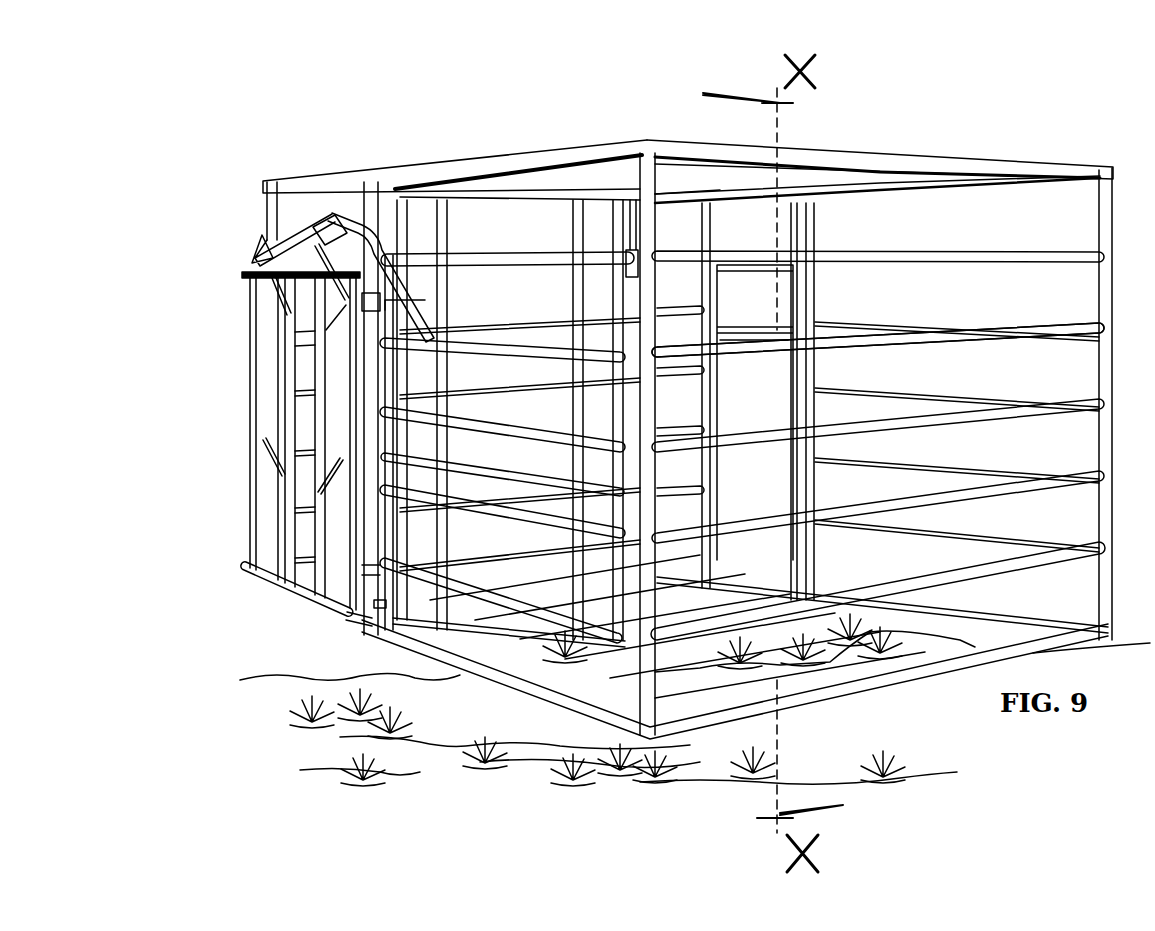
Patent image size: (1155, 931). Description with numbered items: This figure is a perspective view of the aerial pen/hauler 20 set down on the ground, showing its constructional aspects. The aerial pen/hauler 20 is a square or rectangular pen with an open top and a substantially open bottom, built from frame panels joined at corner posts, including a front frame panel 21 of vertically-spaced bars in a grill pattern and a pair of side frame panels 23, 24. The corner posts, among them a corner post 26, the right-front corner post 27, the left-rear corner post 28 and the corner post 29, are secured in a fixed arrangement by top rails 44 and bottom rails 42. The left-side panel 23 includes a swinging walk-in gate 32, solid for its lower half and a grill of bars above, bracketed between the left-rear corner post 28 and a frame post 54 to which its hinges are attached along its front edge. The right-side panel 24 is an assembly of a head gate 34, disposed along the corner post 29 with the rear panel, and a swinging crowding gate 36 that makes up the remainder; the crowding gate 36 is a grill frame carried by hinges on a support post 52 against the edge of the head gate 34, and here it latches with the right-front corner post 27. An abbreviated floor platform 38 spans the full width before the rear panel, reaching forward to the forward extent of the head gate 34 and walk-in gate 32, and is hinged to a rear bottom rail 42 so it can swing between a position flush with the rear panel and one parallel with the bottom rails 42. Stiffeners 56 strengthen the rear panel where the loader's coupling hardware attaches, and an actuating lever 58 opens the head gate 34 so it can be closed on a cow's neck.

The aerial pen/hauler 20 is at (311, 103).
The front frame panel 21 is at (543, 316).
The side frame panel 23 is at (830, 322).
The side frame panel 24 is at (688, 154).
The corner post 26 is at (1097, 222).
The right-front corner post 27 is at (667, 171).
The left-rear corner post 28 is at (710, 226).
The corner post 29 is at (262, 212).
The walk-in gate 32 is at (770, 406).
The head gate 34 is at (252, 548).
The crowding gate 36 is at (542, 617).
The abbreviated floor platform 38 is at (672, 590).
The bottom rails 42 is at (820, 700).
The top rails 44 is at (440, 160).
The support post 52 is at (350, 205).
The frame post 54 is at (817, 233).
The stiffeners 56 is at (445, 227).
The actuating lever 58 is at (417, 303).